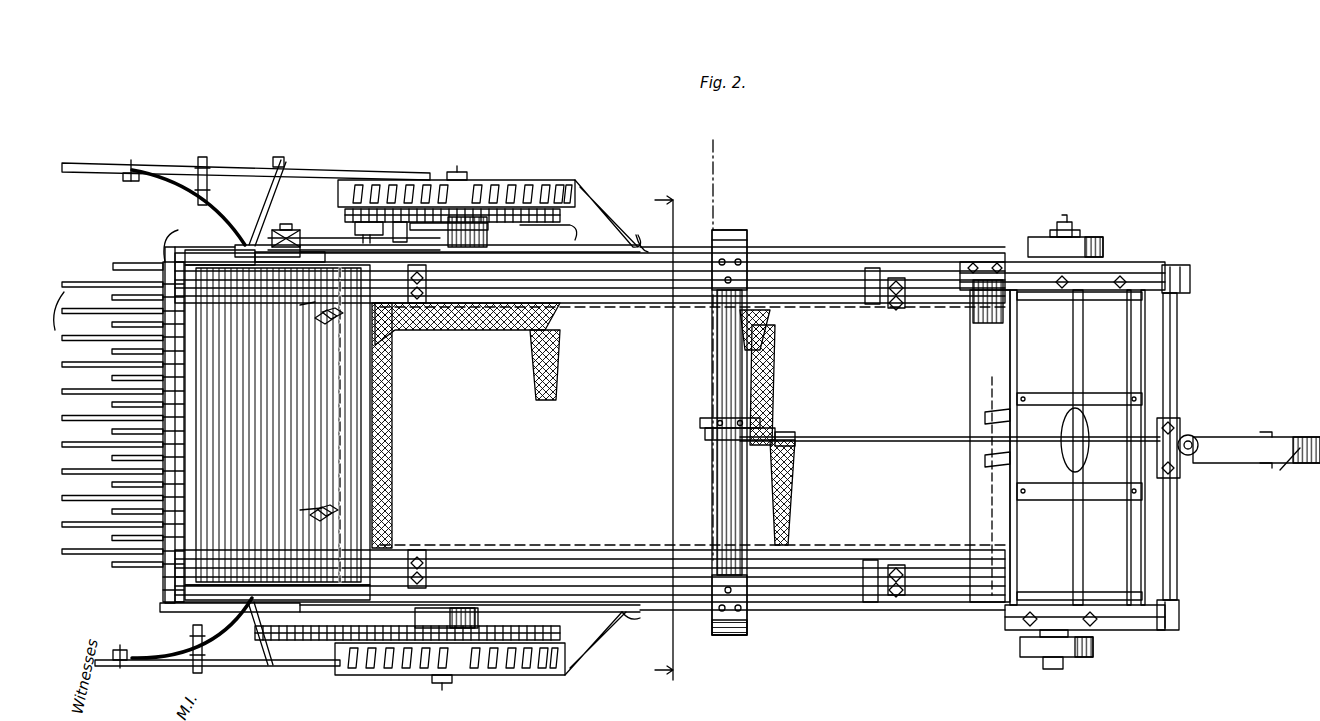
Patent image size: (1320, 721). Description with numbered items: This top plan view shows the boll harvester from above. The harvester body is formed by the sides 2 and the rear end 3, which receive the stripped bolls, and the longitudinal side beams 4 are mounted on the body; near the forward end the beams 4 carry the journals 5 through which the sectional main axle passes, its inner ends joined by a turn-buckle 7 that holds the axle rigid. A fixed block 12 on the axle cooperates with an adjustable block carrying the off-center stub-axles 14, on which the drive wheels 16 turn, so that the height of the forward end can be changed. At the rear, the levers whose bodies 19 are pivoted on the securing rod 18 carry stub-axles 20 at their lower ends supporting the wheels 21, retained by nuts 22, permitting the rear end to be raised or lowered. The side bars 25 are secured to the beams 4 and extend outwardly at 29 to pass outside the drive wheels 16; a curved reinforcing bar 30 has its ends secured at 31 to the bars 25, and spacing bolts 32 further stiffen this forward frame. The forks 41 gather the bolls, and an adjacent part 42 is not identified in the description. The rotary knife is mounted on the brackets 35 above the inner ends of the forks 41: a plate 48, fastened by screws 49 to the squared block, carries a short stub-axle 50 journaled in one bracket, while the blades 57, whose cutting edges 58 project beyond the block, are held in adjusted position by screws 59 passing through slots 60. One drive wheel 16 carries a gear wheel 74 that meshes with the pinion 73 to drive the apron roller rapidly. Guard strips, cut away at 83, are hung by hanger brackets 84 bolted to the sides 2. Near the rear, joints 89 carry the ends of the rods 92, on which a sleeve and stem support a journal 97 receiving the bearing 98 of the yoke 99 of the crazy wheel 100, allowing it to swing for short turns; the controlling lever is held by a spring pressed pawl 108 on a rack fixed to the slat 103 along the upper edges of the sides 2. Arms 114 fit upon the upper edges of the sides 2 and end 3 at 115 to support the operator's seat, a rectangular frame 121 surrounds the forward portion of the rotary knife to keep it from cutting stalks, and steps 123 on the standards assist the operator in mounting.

The sides 2 is at (806, 272).
The rear end 3 is at (1008, 370).
The longitudinal side beams 4 is at (866, 268).
The journals 5 is at (487, 233).
The turn-buckle 7 is at (666, 436).
The block 12 is at (430, 228).
The stub-axles 14 is at (458, 170).
The drive wheel 16 is at (525, 185).
The securing rod 18 is at (1075, 530).
The bodies 19 is at (725, 155).
The stub-axles 20 is at (1063, 220).
The wheels 21 is at (1095, 245).
The nuts 22 is at (1075, 232).
The side bars 25 is at (633, 240).
The outwardly extending portion 29 is at (605, 185).
The reinforcing bar 30 is at (160, 192).
The secured ends 31 is at (134, 173).
The spacing bolts 32 is at (260, 178).
The brackets 35 is at (305, 650).
The forks 41 is at (122, 263).
The fingers 42 is at (113, 295).
The plate 48 is at (235, 256).
The bolts or screws 49 is at (240, 252).
The stub-axle 50 is at (290, 218).
The blade 57 is at (340, 430).
The cutting edges 58 is at (178, 232).
The screws 59 is at (322, 325).
The slots 60 is at (330, 312).
The pinion 73 is at (345, 212).
The gear wheel 74 is at (540, 228).
The cut-away portion 83 is at (615, 300).
The hanger brackets 84 is at (425, 558).
The joints 89 is at (1175, 265).
The rods 92 is at (1177, 360).
The journal 97 is at (1200, 440).
The bearing 98 is at (1180, 435).
The yoke 99 is at (1240, 438).
The crazy wheel 100 is at (1280, 470).
The slat 103 is at (720, 470).
The spring pressed pawl 108 is at (745, 410).
The arms 114 is at (895, 270).
The seating point 115 is at (847, 437).
The rectangular frame 121 is at (160, 606).
The steps 123 is at (750, 235).